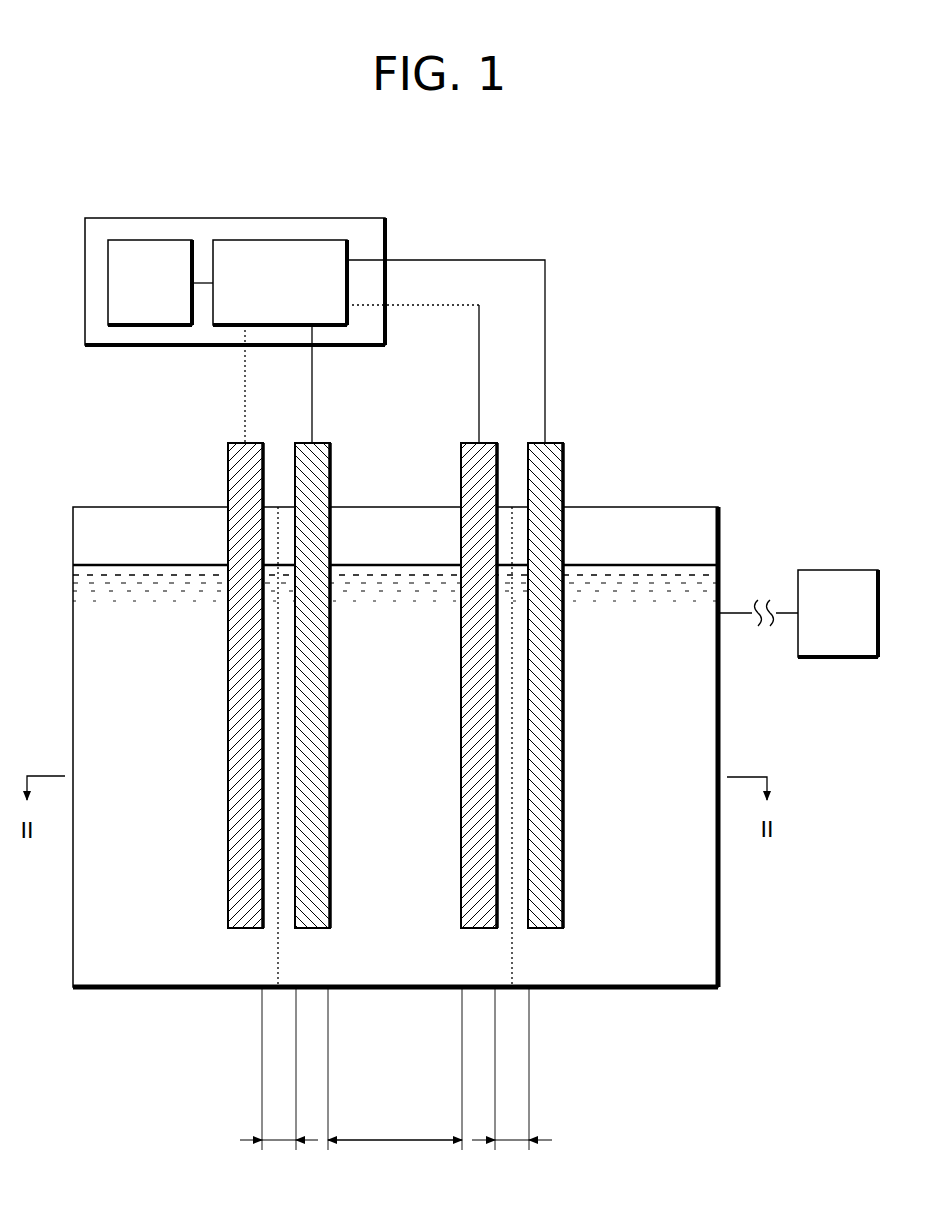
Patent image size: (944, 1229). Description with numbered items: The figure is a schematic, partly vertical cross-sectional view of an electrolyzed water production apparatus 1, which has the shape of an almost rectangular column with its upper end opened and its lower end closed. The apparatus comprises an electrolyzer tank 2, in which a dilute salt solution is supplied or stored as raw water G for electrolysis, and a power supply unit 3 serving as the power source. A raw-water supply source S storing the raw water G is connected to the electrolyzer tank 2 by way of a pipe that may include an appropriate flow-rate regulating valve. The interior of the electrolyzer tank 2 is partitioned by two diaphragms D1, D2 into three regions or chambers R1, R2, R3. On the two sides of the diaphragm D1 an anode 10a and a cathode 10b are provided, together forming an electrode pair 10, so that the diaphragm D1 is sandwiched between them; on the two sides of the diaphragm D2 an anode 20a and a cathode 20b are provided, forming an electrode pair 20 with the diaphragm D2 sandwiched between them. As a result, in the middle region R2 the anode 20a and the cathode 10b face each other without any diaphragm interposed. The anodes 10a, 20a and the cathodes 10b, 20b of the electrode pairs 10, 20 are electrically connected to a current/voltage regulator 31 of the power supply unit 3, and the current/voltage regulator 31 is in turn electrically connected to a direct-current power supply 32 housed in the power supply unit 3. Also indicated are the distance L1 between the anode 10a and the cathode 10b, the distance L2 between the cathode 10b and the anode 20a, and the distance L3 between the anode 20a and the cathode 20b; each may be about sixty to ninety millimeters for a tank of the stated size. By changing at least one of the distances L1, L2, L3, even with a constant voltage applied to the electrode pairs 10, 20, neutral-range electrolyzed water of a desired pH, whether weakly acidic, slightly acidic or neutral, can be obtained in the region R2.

The electrolyzed water production apparatus 1 is at (722, 230).
The electrolyzer tank 2 is at (688, 506).
The power supply unit 3 is at (235, 251).
The current/voltage regulator 31 is at (256, 240).
The direct-current power supply 32 is at (154, 240).
The electrode pair 10 is at (280, 703).
The anode 10a is at (230, 884).
The cathode 10b is at (362, 863).
The electrode pair 20 is at (522, 708).
The anode 20a is at (461, 897).
The cathode 20b is at (563, 895).
The diaphragm D1 is at (277, 940).
The diaphragm D2 is at (510, 937).
The distance L1 is at (280, 1145).
The distance L2 is at (403, 1145).
The distance L3 is at (506, 1145).
The region R1 is at (167, 757).
The region R2 is at (406, 757).
The region R3 is at (643, 757).
The raw-water supply source S is at (836, 568).
The raw water G is at (833, 640).